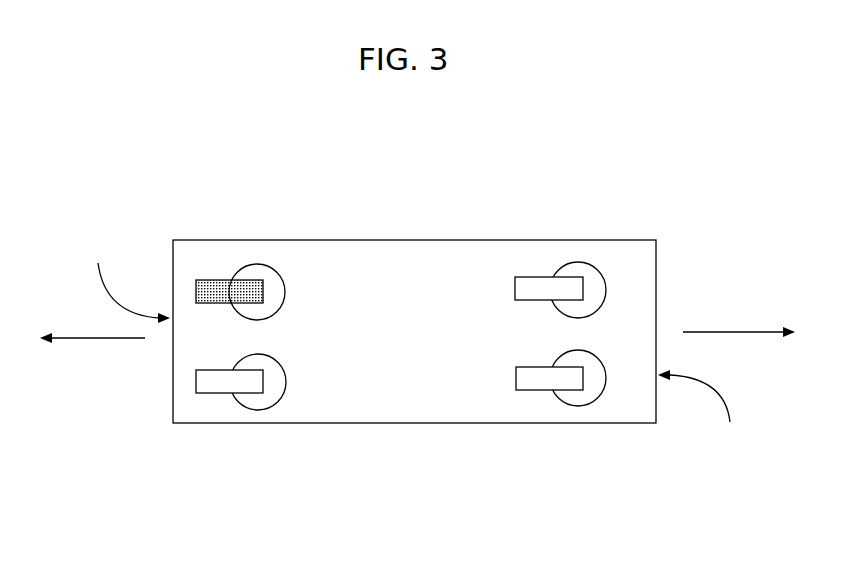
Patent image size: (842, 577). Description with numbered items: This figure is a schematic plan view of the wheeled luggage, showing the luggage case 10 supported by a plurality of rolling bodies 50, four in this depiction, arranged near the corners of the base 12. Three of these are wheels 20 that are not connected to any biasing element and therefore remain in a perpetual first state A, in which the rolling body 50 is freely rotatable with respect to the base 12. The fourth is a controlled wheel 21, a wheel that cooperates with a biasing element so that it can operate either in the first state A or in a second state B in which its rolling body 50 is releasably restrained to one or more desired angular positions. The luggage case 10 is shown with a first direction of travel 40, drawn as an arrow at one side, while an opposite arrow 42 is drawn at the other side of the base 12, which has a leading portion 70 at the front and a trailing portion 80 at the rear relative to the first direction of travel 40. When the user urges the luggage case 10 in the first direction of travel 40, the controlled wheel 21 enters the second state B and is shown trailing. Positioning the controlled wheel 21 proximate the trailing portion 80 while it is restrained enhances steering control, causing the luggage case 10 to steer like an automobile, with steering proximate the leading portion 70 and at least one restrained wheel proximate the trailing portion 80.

The luggage case 10 is at (428, 313).
The base 12 is at (433, 365).
The wheel 20 is at (590, 285).
The controlled wheel 21 is at (277, 283).
The rolling body 50 is at (210, 285).
The trailing portion 80 is at (123, 278).
The reverse flow direction 42 is at (102, 352).
The first direction of travel 40 is at (738, 348).
The leading portion 70 is at (701, 416).